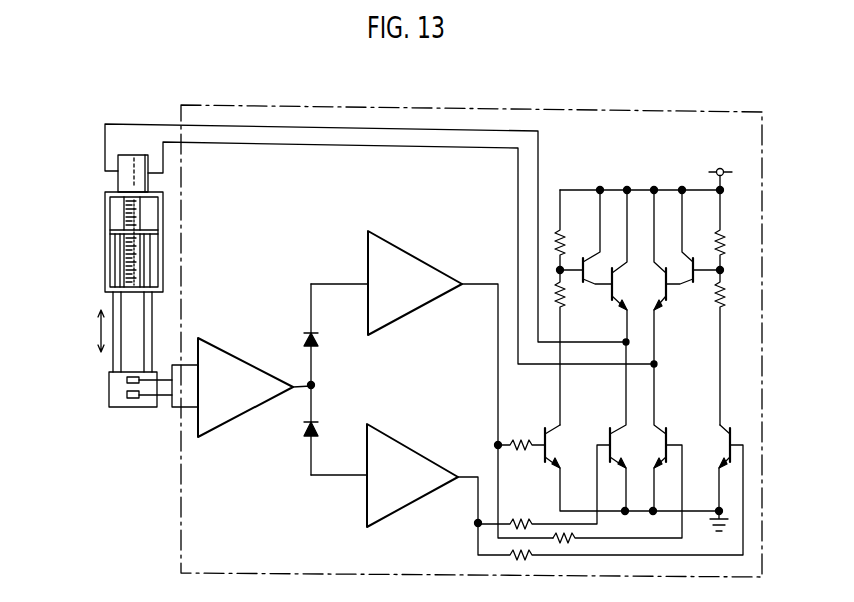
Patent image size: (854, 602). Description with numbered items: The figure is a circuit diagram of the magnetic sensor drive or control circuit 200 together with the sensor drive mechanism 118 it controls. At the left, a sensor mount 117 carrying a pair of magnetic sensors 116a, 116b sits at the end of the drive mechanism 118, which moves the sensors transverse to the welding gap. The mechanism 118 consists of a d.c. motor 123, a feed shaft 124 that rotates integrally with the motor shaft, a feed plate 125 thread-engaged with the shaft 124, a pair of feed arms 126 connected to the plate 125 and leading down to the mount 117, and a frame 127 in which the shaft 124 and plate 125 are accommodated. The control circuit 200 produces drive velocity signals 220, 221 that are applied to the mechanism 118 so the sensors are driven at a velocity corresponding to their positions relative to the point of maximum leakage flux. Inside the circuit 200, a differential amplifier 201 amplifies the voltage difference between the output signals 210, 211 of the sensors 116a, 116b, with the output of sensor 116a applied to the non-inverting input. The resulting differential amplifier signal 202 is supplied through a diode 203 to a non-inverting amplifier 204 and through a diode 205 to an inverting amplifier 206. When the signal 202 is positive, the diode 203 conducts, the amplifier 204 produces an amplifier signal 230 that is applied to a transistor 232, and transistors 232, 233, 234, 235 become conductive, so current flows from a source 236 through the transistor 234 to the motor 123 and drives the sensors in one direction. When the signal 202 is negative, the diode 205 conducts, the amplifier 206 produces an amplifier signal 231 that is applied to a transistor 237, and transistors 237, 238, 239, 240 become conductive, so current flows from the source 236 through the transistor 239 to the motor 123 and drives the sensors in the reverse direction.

The magnetic sensor drive or control circuit 200 is at (180, 510).
The drive velocity signal 220 is at (160, 124).
The drive velocity signal 221 is at (226, 150).
The d.c. motor 123 is at (118, 182).
The drive mechanism 118 is at (164, 233).
The feed plate 125 is at (122, 227).
The feed shaft 124 is at (132, 250).
The frame 127 is at (106, 284).
The feed arms 126 is at (121, 330).
The sensor mount 117 is at (117, 409).
The magnetic sensor 116b is at (126, 378).
The magnetic sensor 116a is at (126, 394).
The output signal 210 is at (173, 408).
The output signal 211 is at (188, 363).
The differential amplifier 201 is at (252, 413).
The differential amplifier signal 202 is at (300, 384).
The diode 203 is at (315, 339).
The diode 205 is at (316, 434).
The non-inverting amplifier 204 is at (425, 310).
The inverting amplifier 206 is at (429, 449).
The amplifier signal 230 is at (497, 332).
The amplifier signal 231 is at (478, 473).
The source 236 is at (712, 171).
The transistor 233 is at (585, 260).
The transistor 234 is at (610, 284).
The transistor 239 is at (667, 285).
The transistor 238 is at (693, 260).
The transistor 232 is at (545, 427).
The transistor 240 is at (608, 428).
The transistor 235 is at (667, 428).
The transistor 237 is at (732, 428).